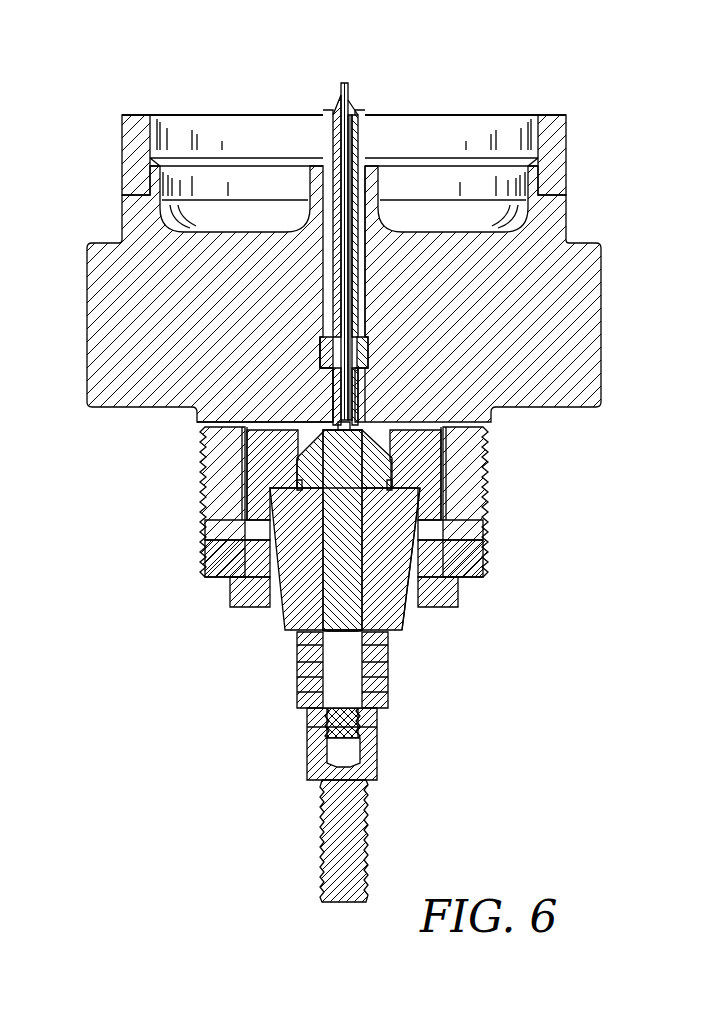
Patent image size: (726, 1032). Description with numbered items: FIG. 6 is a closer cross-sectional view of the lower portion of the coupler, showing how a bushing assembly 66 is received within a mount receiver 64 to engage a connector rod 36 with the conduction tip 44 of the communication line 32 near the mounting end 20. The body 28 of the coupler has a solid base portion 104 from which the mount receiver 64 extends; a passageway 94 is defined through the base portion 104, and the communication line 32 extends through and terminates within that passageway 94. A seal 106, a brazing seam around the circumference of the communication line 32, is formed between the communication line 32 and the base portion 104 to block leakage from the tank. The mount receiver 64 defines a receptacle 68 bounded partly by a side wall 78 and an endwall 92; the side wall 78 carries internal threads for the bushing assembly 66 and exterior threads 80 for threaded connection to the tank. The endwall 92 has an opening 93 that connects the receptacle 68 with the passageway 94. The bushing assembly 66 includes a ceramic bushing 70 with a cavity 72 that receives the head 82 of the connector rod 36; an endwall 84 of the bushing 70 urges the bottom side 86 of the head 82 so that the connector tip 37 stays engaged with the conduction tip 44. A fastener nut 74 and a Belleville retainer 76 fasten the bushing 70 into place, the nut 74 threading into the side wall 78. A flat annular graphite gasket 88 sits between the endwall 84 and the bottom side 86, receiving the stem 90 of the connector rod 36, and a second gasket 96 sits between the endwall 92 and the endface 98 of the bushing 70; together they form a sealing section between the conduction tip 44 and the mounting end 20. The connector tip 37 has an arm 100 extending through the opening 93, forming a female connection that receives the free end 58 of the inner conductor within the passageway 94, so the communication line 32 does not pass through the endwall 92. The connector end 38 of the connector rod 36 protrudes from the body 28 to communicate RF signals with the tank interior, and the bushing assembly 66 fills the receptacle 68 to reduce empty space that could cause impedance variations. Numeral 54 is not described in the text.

The mounting end 20 is at (447, 683).
The body 28 is at (345, 459).
The communication line 32 is at (356, 117).
The connector rod 36 is at (361, 381).
The connector tip 37 is at (318, 369).
The connector end 38 is at (389, 841).
The conduction tip 44 is at (350, 332).
The fiber coating 54 is at (371, 295).
The free end 58 is at (372, 338).
The mount receiver 64 is at (503, 578).
The bushing assembly 66 is at (423, 631).
The receptacle 68 is at (327, 421).
The ceramic bushing 70 is at (304, 563).
The cavity 72 is at (371, 411).
The fastener nut 74 is at (443, 583).
The Belleville retainer 76 is at (452, 498).
The side wall 78 is at (468, 553).
The exterior threads 80 is at (162, 495).
The head 82 is at (379, 469).
The endwall 84 is at (300, 478).
The bottom side 86 is at (313, 485).
The gasket 88 is at (444, 516).
The stem 90 is at (353, 558).
The endwall 92 is at (380, 406).
The opening 93 is at (314, 413).
The passageway 94 is at (312, 259).
The gasket 96 is at (231, 423).
The endface 98 is at (335, 437).
The arm 100 is at (289, 410).
The base portion 104 is at (540, 283).
The seal 106 is at (309, 152).